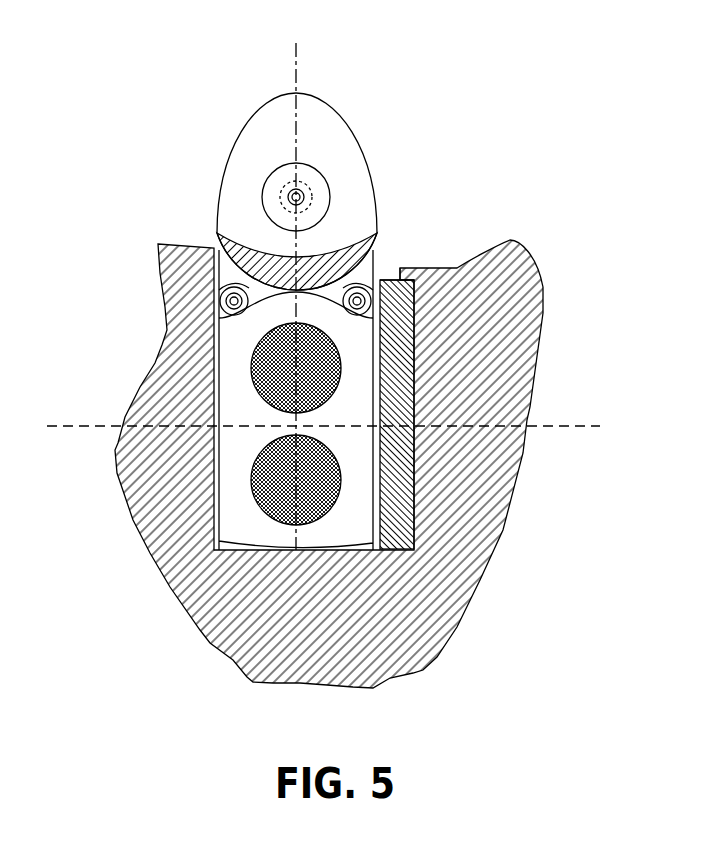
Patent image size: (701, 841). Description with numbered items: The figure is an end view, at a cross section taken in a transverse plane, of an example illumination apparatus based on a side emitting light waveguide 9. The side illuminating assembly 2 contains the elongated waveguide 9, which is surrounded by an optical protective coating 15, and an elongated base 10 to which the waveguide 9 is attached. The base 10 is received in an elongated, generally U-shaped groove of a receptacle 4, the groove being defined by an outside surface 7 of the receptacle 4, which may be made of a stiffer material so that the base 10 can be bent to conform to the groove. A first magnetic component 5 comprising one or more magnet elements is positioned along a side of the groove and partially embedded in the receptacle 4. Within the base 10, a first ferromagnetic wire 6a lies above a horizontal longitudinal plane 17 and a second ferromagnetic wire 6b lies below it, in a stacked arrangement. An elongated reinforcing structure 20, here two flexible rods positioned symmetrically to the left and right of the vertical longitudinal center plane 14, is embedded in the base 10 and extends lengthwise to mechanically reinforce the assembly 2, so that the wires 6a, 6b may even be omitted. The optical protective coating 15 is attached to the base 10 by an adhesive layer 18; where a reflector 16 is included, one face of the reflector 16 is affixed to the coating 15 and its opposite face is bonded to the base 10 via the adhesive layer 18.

The side illuminating assembly 2 is at (195, 216).
The receptacle 4 is at (473, 557).
The first magnetic component 5 is at (397, 460).
The first ferromagnetic wire 6a is at (312, 368).
The second ferromagnetic wire 6b is at (325, 470).
The outside surface 7 is at (396, 274).
The side emitting light waveguide 9 is at (290, 198).
The base 10 is at (235, 358).
The vertical longitudinal center plane 14 is at (295, 58).
The optical protective coating 15 is at (340, 139).
The reflector 16 is at (378, 263).
The horizontal longitudinal plane 17 is at (100, 426).
The adhesive layer 18 is at (325, 205).
The elongated reinforcing structure 20 is at (218, 316).